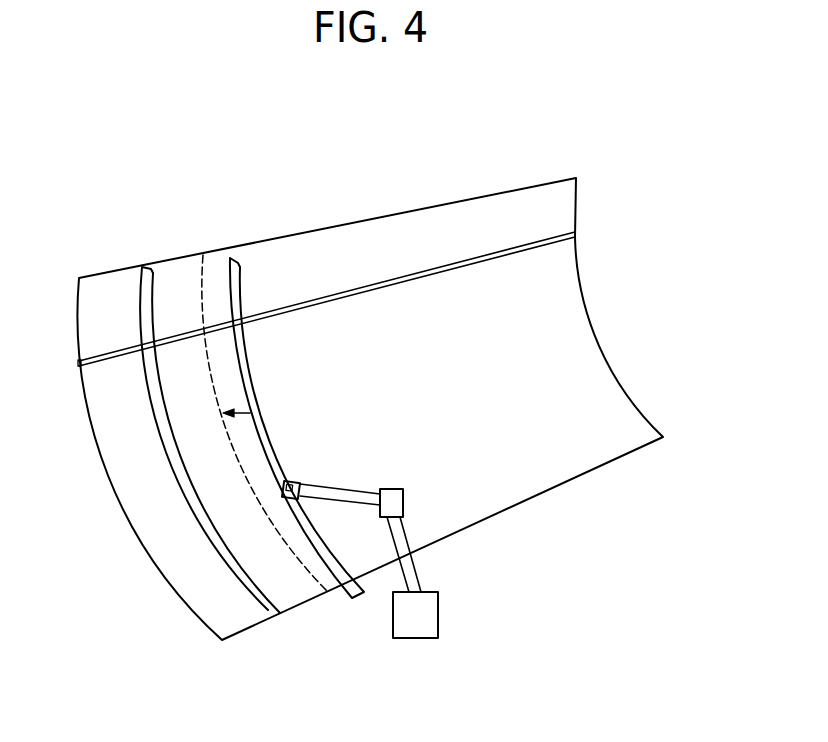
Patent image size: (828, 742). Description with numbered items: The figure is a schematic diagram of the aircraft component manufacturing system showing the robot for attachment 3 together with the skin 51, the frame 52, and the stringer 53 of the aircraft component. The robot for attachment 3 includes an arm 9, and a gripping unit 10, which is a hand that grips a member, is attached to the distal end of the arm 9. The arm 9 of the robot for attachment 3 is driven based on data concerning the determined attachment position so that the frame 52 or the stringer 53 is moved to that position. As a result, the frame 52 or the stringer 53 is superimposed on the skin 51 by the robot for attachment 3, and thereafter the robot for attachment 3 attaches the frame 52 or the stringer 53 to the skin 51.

The skin 51 is at (424, 208).
The frame 52 is at (153, 293).
The stringer 53 is at (345, 292).
The gripping unit 10 is at (290, 477).
The arm 9 is at (405, 529).
The robot for attachment 3 is at (438, 615).